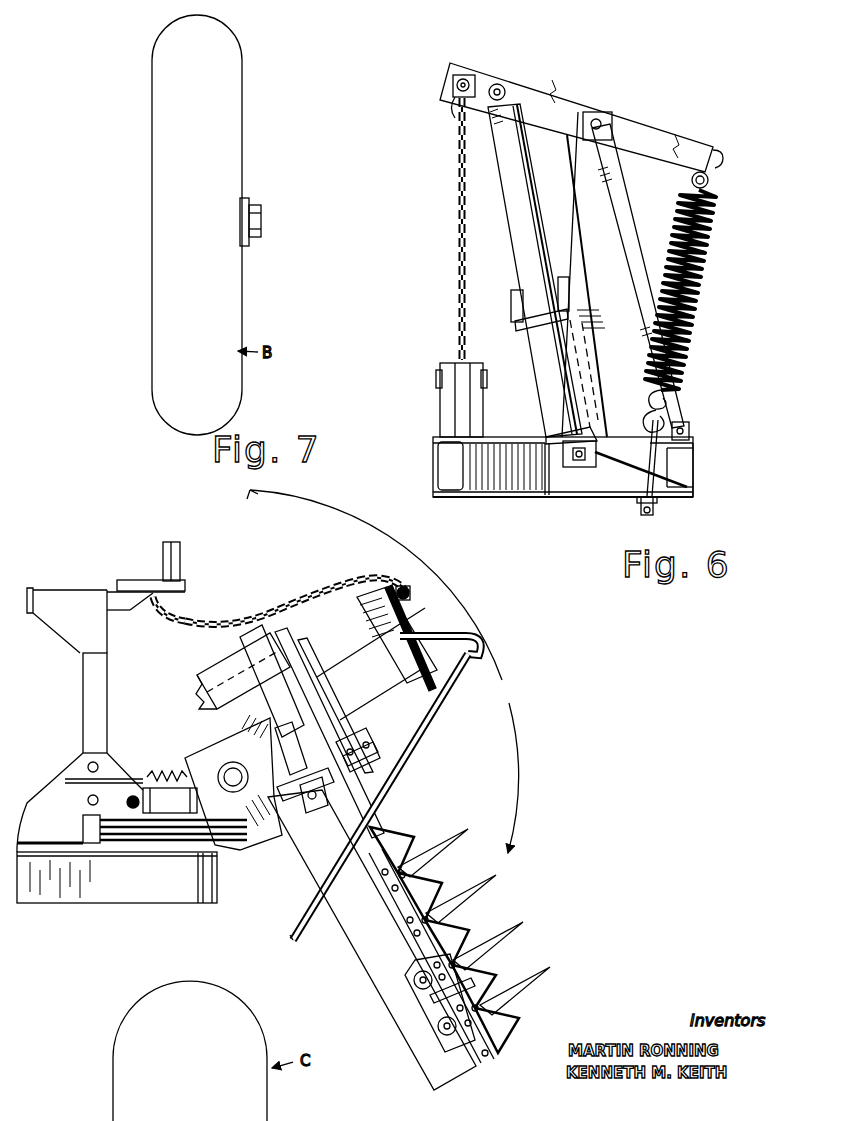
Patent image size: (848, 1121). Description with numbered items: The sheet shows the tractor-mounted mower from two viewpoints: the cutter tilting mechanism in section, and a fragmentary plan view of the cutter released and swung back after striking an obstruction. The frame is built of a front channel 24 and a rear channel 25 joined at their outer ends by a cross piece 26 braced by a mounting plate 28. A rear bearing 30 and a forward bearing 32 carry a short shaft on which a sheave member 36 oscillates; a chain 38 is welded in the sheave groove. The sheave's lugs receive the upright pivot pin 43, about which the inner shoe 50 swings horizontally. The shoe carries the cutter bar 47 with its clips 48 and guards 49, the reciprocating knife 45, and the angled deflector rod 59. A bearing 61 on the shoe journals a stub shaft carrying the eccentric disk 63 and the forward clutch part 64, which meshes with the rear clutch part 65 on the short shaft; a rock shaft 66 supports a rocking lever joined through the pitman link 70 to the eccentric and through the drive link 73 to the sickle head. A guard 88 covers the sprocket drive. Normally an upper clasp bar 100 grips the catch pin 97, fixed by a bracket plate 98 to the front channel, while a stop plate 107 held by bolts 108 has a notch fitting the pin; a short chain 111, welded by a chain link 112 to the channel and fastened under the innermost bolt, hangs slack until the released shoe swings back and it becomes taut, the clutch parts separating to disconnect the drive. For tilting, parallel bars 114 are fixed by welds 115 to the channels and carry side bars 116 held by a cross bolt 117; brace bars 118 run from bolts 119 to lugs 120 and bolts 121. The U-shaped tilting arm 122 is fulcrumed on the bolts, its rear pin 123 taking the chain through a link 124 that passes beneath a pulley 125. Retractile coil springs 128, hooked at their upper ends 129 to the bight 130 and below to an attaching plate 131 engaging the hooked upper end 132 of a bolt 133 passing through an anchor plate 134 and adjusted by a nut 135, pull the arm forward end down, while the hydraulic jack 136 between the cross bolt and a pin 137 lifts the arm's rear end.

In FIG. 6, the front channel 24 is at (693, 466).
In FIG. 7, the front channel 24 is at (30, 588).
In FIG. 6, the rear channel 25 is at (452, 462).
In FIG. 7, the cross piece 26 is at (88, 708).
In FIG. 7, the mounting plate 28 is at (57, 783).
In FIG. 7, the rear bearing 30 is at (196, 860).
In FIG. 7, the forward bearing 32 is at (220, 850).
In FIG. 7, the sheave member 36 is at (130, 842).
In FIG. 6, the chain 38 is at (457, 300).
In FIG. 7, the upright pivot pin 43 is at (238, 765).
In FIG. 7, the knife 45 is at (372, 978).
In FIG. 7, the cutter bar 47 is at (357, 943).
In FIG. 7, the clips 48 is at (421, 1000).
In FIG. 7, the guards 49 is at (484, 914).
In FIG. 7, the inner shoe 50 is at (449, 717).
In FIG. 7, the deflector rod 59 is at (410, 760).
In FIG. 7, the bearing 61 is at (222, 684).
In FIG. 7, the eccentric disk 63 is at (246, 650).
In FIG. 7, the forward clutch part 64 is at (198, 705).
In FIG. 7, the rear clutch part 65 is at (149, 774).
In FIG. 7, the rock shaft 66 is at (283, 800).
In FIG. 7, the pitman link 70 is at (298, 660).
In FIG. 7, the drive link 73 is at (360, 790).
In FIG. 7, the guard 88 is at (218, 903).
In FIG. 7, the catch pin 97 is at (175, 542).
In FIG. 7, the bracket plate 98 is at (133, 580).
In FIG. 7, the upper clasp bar 100 is at (390, 641).
In FIG. 7, the stop plate 107 is at (415, 620).
In FIG. 7, the bolts 108 is at (418, 590).
In FIG. 7, the chain 111 is at (282, 608).
In FIG. 7, the chain link 112 is at (153, 600).
In FIG. 6, the parallel bars 114 is at (518, 486).
In FIG. 6, the welds 115 is at (470, 494).
In FIG. 6, the side bars 116 is at (593, 303).
In FIG. 6, the cross bolt 117 is at (577, 466).
In FIG. 6, the brace bars 118 is at (623, 228).
In FIG. 6, the bolts 119 is at (607, 112).
In FIG. 6, the lugs 120 is at (690, 434).
In FIG. 6, the bolts 121 is at (688, 422).
In FIG. 6, the tilting arm 122 is at (547, 103).
In FIG. 6, the pin 123 is at (468, 80).
In FIG. 6, the link 124 is at (453, 107).
In FIG. 6, the pulley 125 is at (455, 342).
In FIG. 6, the retractile coil springs 128 is at (700, 285).
In FIG. 6, the hooked upper ends 129 is at (713, 176).
In FIG. 6, the bight 130 is at (717, 150).
In FIG. 6, the attaching plate 131 is at (647, 405).
In FIG. 6, the hooked upper end 132 is at (643, 427).
In FIG. 6, the bolt 133 is at (646, 515).
In FIG. 6, the anchor plate 134 is at (630, 497).
In FIG. 6, the nut 135 is at (655, 510).
In FIG. 6, the hydraulic jack 136 is at (532, 173).
In FIG. 6, the pin 137 is at (506, 92).